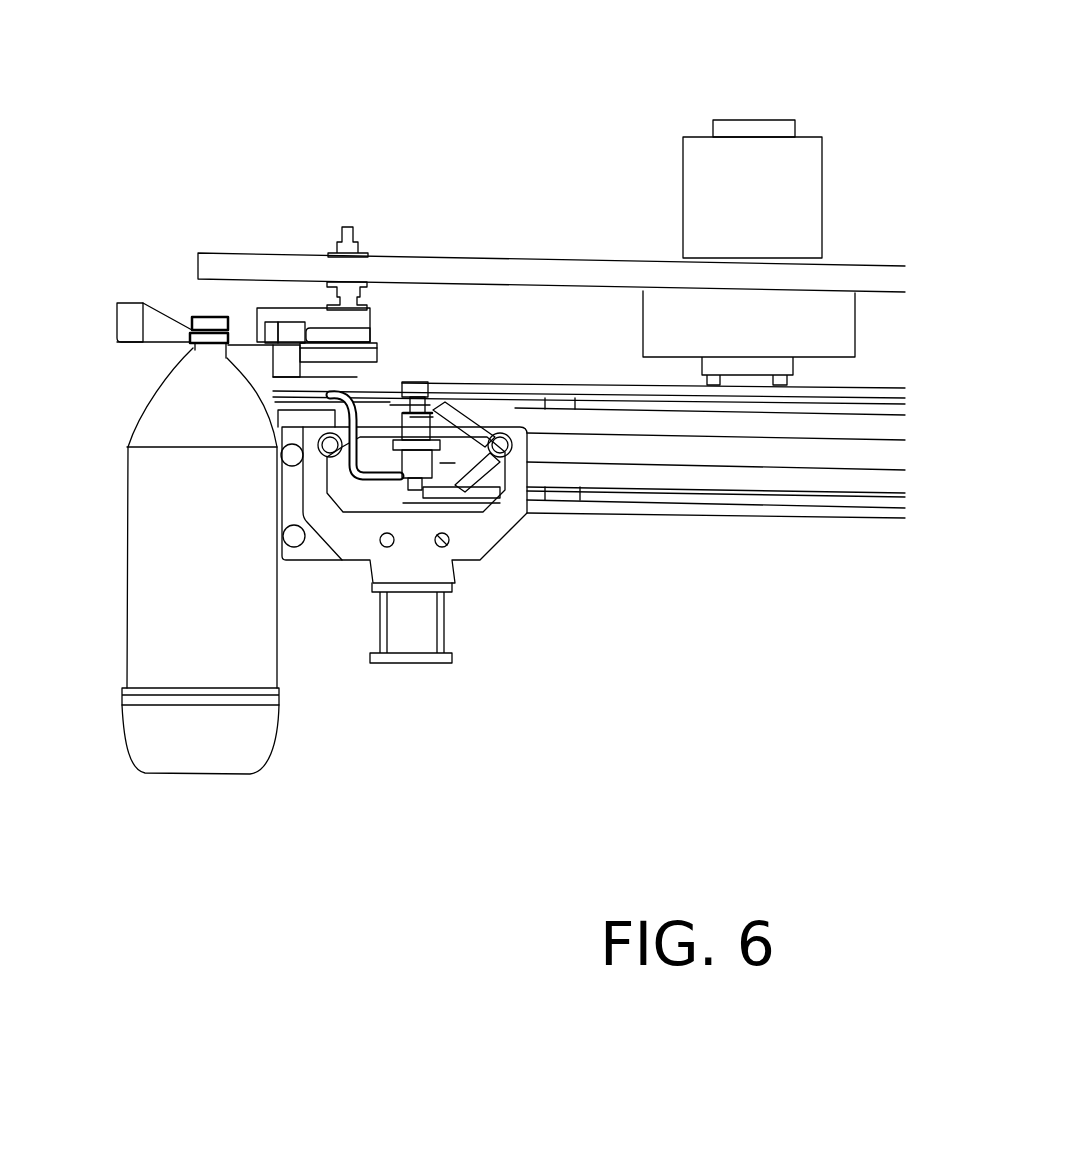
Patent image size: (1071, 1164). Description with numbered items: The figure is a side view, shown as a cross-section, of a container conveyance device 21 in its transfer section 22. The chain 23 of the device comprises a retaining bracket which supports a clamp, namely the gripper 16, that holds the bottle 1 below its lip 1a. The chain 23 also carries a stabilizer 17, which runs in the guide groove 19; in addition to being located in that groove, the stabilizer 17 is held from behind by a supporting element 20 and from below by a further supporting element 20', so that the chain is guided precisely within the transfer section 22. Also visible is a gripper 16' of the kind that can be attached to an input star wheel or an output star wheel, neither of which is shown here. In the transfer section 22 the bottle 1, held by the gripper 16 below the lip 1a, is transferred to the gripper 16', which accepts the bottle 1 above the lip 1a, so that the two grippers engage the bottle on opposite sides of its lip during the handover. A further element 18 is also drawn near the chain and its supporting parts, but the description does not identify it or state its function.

The bottle 1 is at (247, 657).
The lip 1a is at (190, 346).
The gripper 16 is at (208, 268).
The gripper 16' is at (126, 285).
The stabilizer 17 is at (288, 336).
The fastening block 18 is at (372, 312).
The guide groove 19 is at (272, 338).
The supporting element 20 is at (380, 325).
The supporting element 20' is at (416, 403).
The container conveyance device 21 is at (580, 107).
The transfer section 22 is at (167, 205).
The chain 23 is at (440, 420).